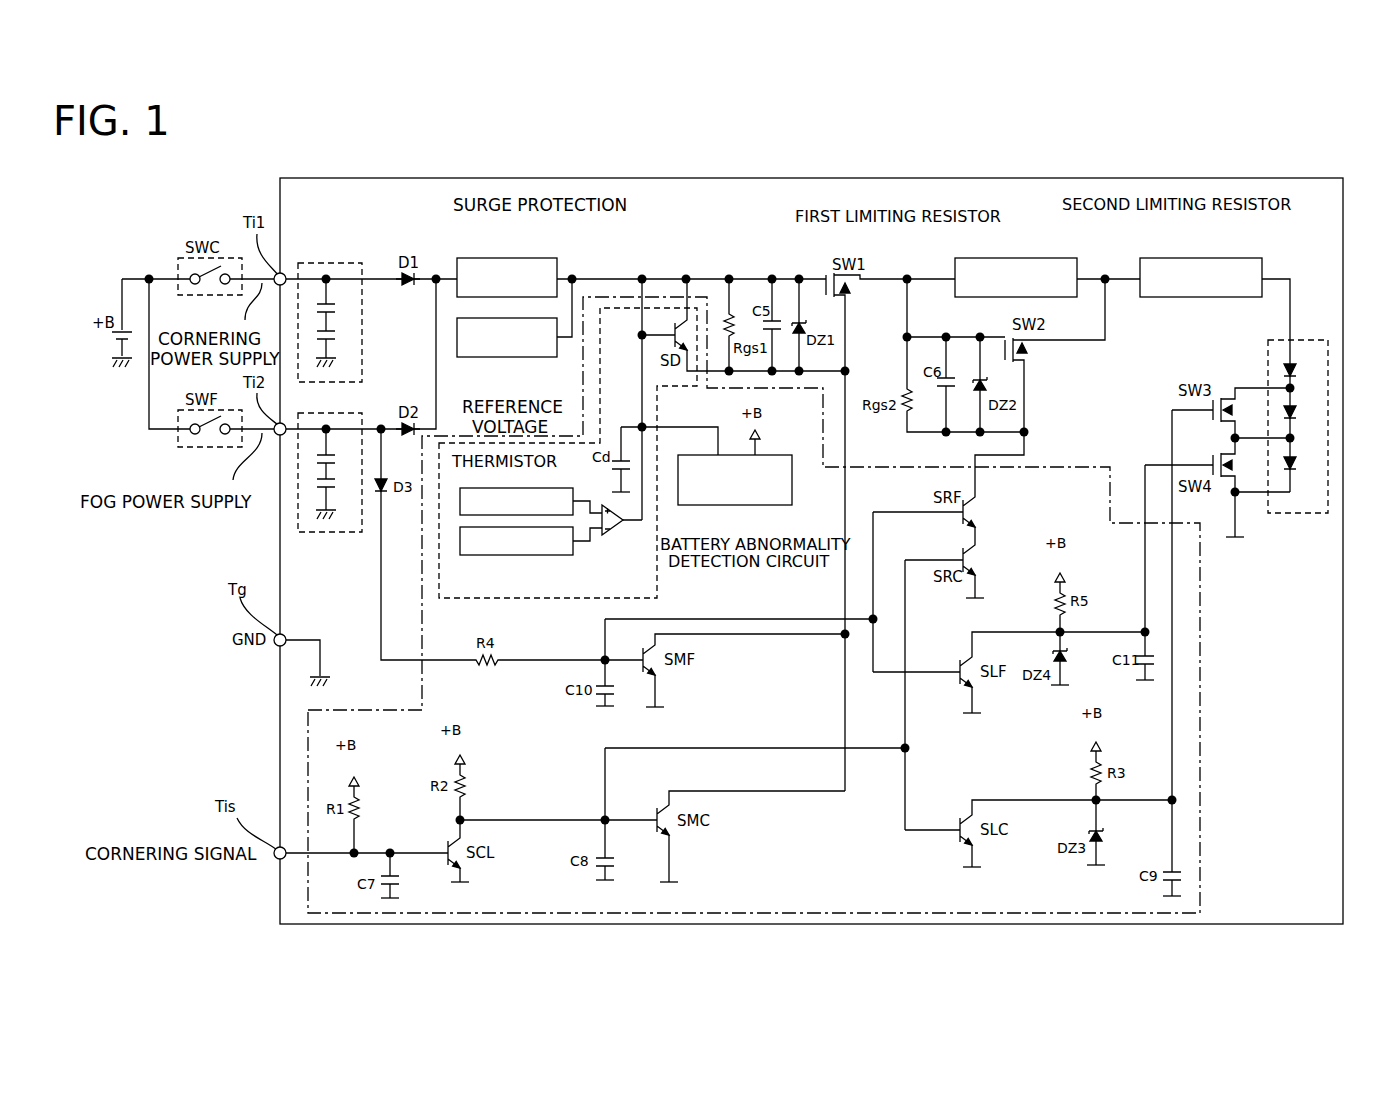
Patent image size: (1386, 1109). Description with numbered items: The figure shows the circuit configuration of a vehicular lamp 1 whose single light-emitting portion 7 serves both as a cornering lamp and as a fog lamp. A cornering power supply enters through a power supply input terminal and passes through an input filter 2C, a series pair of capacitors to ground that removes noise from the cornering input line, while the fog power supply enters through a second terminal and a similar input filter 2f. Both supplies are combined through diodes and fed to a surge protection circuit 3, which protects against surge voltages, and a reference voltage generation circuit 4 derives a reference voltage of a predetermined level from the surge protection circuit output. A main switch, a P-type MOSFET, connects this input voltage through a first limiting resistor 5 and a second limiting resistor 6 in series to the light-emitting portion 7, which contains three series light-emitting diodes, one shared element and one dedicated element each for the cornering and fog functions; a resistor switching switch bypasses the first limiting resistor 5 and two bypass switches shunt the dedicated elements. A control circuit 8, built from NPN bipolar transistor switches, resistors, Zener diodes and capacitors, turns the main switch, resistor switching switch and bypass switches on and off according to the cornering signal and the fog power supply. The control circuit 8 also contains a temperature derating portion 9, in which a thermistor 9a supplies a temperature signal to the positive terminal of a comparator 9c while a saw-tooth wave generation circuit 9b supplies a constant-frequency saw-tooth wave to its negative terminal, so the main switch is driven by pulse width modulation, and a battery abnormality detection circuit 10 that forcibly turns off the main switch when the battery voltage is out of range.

The vehicular lamp 1 is at (1210, 924).
The input filter 2C is at (343, 263).
The input filter 2f is at (330, 532).
The surge protection circuit 3 is at (517, 258).
The reference voltage generation circuit 4 is at (503, 357).
The first limiting resistor 5 is at (1000, 258).
The second limiting resistor 6 is at (1195, 258).
The light-emitting portion 7 is at (1293, 513).
The control circuit 8 is at (1200, 845).
The temperature derating portion 9 is at (577, 598).
The thermistor 9a is at (548, 488).
The saw-tooth wave generation circuit 9b is at (537, 555).
The comparator 9c is at (620, 542).
The battery abnormality detection circuit 10 is at (745, 505).